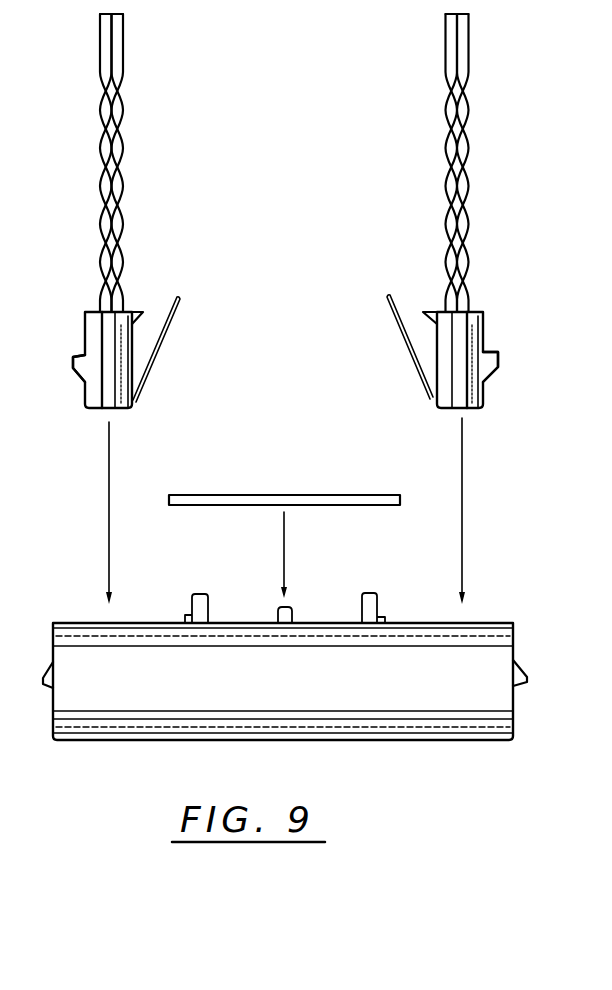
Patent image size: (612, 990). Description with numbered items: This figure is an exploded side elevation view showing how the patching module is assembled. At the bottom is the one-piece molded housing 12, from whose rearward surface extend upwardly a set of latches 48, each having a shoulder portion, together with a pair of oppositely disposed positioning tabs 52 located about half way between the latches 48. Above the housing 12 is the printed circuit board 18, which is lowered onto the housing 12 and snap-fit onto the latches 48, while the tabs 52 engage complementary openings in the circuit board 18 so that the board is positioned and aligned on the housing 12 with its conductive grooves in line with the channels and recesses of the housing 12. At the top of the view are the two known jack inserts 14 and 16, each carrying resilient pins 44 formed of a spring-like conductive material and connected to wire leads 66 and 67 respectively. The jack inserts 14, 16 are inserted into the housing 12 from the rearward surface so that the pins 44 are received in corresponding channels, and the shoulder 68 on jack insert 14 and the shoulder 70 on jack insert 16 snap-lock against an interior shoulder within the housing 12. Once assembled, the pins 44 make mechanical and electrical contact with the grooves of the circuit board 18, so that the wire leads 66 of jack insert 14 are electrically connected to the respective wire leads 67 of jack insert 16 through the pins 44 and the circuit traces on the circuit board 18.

The housing 12 is at (480, 621).
The jack insert 14 is at (85, 328).
The jack insert 16 is at (484, 316).
The printed circuit board 18 is at (247, 494).
The resilient pin 44 is at (167, 334).
The latch 48 is at (372, 593).
The positioning tab 52 is at (290, 612).
The wire lead 66 is at (100, 36).
The wire lead 67 is at (446, 36).
The shoulder 68 is at (73, 357).
The shoulder 70 is at (498, 352).